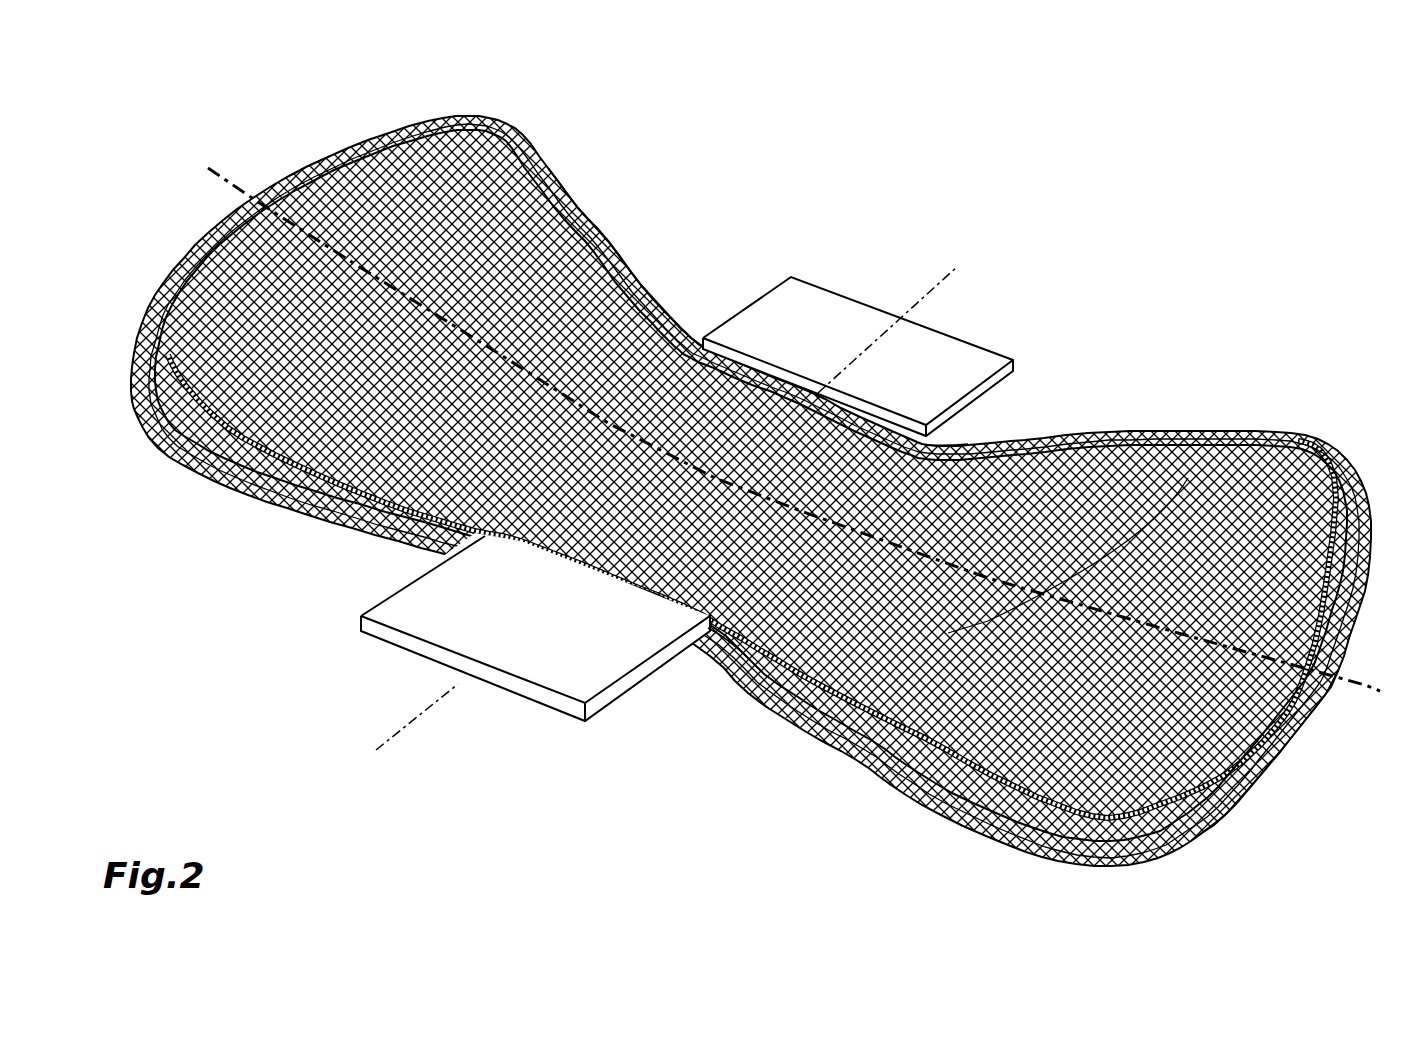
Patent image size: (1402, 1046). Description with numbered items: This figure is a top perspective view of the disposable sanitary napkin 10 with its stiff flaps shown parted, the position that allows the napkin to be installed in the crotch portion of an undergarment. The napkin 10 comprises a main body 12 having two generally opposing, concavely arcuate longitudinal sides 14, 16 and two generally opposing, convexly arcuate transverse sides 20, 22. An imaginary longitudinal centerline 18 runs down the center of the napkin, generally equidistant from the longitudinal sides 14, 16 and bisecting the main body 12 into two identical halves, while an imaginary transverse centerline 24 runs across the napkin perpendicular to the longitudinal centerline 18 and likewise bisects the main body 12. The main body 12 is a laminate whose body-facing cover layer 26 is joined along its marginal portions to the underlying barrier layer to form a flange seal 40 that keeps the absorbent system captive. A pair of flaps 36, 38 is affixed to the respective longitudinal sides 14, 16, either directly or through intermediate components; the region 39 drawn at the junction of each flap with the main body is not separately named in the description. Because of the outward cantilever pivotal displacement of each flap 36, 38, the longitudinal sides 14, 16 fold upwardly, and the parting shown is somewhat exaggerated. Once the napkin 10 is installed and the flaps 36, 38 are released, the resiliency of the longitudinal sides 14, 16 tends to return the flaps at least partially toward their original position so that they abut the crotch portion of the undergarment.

The sanitary napkin 10 is at (1166, 173).
The main body 12 is at (740, 550).
The longitudinal side 14 is at (243, 490).
The longitudinal side 16 is at (633, 275).
The longitudinal centerline 18 is at (233, 186).
The transverse side 20 is at (385, 130).
The transverse side 22 is at (1273, 757).
The transverse centerline 24 is at (422, 698).
The cover layer 26 is at (1180, 470).
The flap 36 is at (514, 600).
The flap 38 is at (830, 333).
The flap juncture 39 is at (933, 425).
The flange seal 40 is at (167, 427).